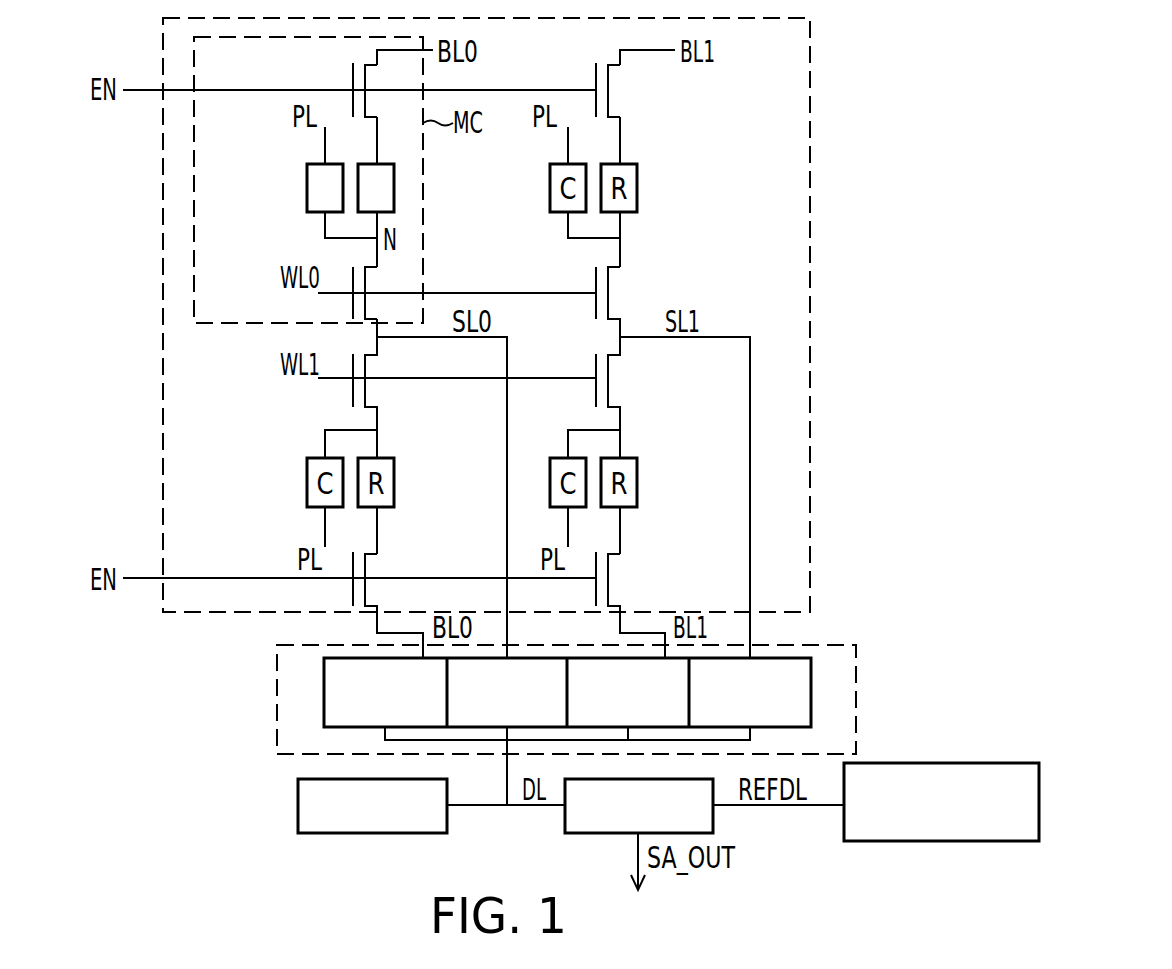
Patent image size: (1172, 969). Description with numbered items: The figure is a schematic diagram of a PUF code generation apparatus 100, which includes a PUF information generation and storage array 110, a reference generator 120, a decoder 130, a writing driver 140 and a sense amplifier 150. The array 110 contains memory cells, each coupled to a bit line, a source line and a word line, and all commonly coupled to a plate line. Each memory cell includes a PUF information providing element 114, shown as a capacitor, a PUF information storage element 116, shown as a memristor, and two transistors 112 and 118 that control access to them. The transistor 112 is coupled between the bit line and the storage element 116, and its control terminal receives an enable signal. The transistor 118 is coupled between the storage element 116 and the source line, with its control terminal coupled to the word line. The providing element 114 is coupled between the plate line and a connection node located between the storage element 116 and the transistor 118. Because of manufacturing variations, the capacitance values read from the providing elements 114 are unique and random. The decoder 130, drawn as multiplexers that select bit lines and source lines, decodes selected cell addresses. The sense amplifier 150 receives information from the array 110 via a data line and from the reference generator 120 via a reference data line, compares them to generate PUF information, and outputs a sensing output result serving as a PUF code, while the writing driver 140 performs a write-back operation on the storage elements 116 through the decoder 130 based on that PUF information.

The PUF code generation apparatus 100 is at (1148, 888).
The PUF information generation and storage array 110 is at (163, 326).
The transistor 112 is at (353, 68).
The PUF information providing element 114 is at (307, 187).
The PUF information storage element 116 is at (394, 184).
The transistor 118 is at (377, 277).
The reference generator 120 is at (1039, 800).
The decoder 130 is at (277, 688).
The writing driver 140 is at (298, 805).
The sense amplifier 150 is at (603, 833).